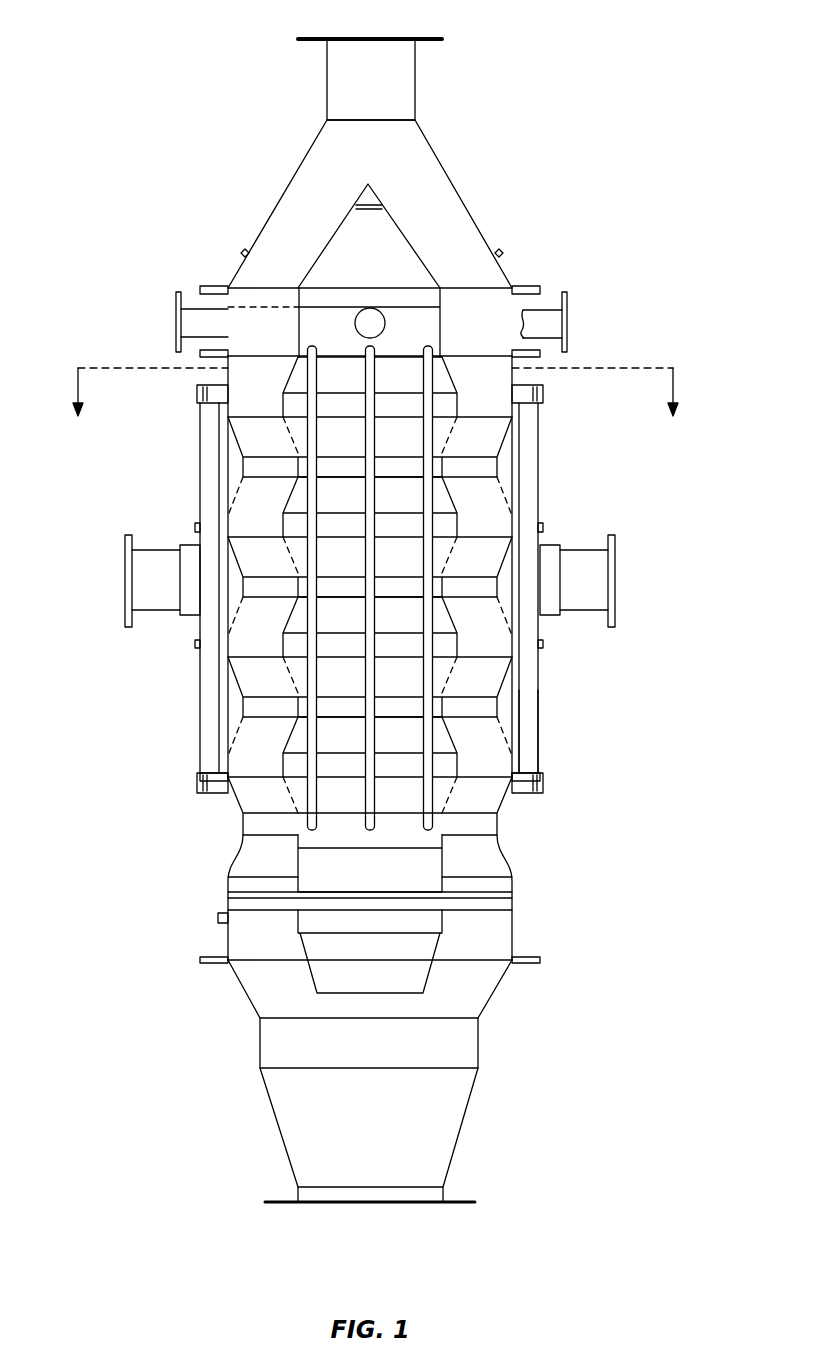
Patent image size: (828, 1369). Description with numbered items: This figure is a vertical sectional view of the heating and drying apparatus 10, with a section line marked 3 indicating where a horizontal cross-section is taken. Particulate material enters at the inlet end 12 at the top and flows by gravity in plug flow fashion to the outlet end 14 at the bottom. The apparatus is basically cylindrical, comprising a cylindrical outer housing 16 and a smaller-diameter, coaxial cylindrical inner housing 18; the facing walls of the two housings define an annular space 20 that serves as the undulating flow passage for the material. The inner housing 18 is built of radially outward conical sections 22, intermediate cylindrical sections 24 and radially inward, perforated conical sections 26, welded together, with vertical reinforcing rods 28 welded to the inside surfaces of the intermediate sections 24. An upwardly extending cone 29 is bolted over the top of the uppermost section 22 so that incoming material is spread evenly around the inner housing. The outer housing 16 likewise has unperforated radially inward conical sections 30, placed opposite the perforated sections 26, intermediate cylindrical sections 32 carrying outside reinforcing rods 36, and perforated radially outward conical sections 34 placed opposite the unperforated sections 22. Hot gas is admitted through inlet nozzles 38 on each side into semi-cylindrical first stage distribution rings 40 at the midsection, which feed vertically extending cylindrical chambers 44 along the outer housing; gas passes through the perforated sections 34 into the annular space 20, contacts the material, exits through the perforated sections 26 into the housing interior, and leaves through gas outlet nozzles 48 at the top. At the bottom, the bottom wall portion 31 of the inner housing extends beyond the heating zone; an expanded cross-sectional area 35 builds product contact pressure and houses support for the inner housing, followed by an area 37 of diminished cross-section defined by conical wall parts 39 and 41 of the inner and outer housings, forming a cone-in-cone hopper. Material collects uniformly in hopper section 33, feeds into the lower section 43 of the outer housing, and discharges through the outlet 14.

The heating and/or drying apparatus 10 is at (156, 92).
The particulate material inlet end 12 is at (383, 38).
The particulate material outlet end 14 is at (400, 1205).
The cylindrical outer housing 16 is at (505, 808).
The cylindrical inner housing 18 is at (536, 364).
The annular space 20 is at (262, 498).
The conical sections 22 is at (448, 605).
The intermediate cylindrical sections 24 is at (448, 705).
The conical sections 26 is at (520, 517).
The reinforcing rods 28 is at (505, 795).
The upwardly extending cone 29 is at (410, 238).
The conical sections 30 is at (236, 443).
The bottom wall portion 31 is at (437, 920).
The intermediate cylindrical sections 32 is at (273, 590).
The hopper section 33 is at (260, 1045).
The conical sections 34 is at (233, 733).
The expanded cross-sectional area 35 is at (233, 930).
The reinforcing rods 36 is at (522, 690).
The area of diminished cross-sectional area 37 is at (427, 990).
The hot gas inlet nozzles 38 is at (152, 557).
The conical wall part 39 is at (458, 998).
The semi-cylindrical first stage distribution rings 40 is at (188, 607).
The conical wall part 41 is at (508, 973).
The lower section 43 is at (297, 1152).
The vertically extending cylindrical chambers 44 is at (530, 463).
The gas outlet nozzles 48 is at (196, 312).
The section line 3- 3 is at (377, 409).